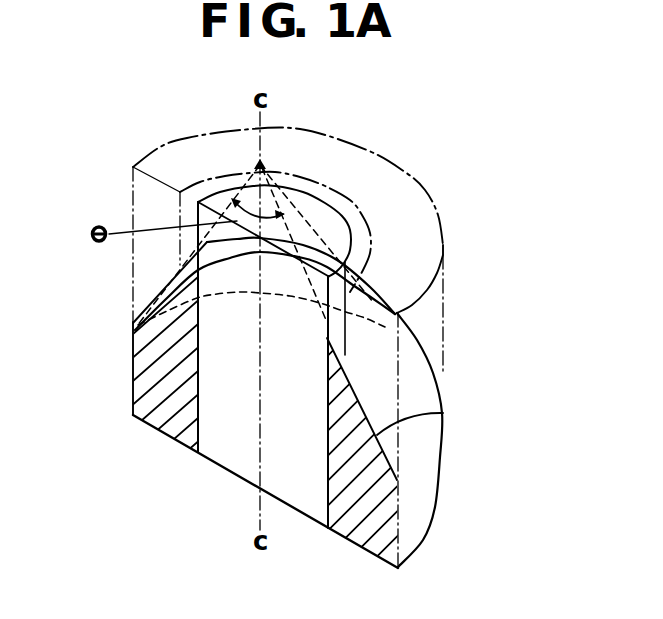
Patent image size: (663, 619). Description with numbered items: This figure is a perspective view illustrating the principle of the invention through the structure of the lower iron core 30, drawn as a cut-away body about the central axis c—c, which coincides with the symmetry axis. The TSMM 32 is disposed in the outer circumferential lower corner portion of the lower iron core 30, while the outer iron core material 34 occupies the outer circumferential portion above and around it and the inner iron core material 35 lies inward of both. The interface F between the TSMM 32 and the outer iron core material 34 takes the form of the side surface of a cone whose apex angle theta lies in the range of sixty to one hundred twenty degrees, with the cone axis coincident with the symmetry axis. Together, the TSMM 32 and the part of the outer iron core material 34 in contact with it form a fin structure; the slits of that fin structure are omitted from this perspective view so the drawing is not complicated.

The lower iron core 30 is at (451, 322).
The TSMM 32 is at (360, 535).
The outer iron core material 34 is at (400, 183).
The inner iron core material 35 is at (223, 457).
The interface F is at (444, 412).